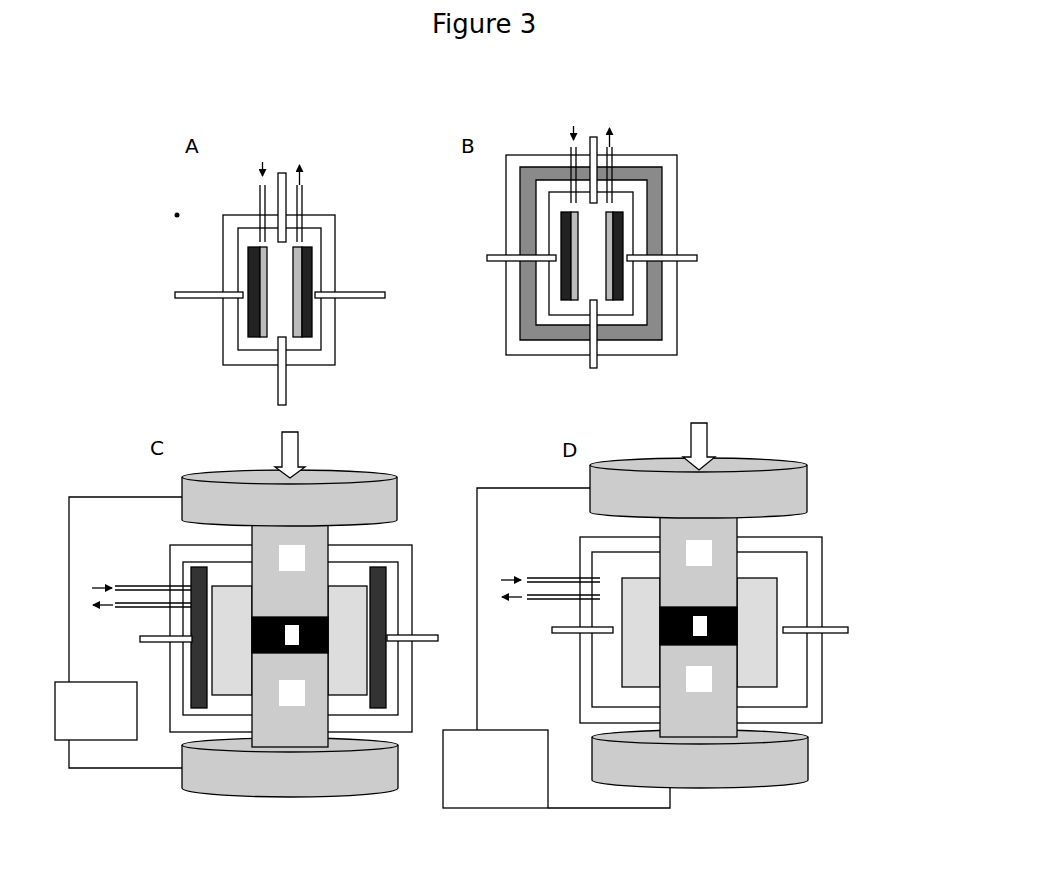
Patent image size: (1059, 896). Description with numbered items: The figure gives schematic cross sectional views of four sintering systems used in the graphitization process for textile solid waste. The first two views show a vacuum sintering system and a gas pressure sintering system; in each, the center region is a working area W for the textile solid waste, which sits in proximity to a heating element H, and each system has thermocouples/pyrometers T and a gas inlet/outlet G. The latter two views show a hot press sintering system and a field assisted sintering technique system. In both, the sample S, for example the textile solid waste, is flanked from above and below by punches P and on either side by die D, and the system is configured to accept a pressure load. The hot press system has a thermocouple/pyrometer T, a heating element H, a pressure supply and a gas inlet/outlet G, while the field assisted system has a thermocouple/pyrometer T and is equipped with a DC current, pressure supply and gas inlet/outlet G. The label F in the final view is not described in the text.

In FIG. 3A, the thermocouple/pyrometer T is at (280, 271).
In FIG. 3B, the thermocouple/pyrometer T is at (592, 234).
In FIG. 3C, the thermocouple/pyrometer T is at (286, 655).
In FIG. 3D, the thermocouple/pyrometer T is at (696, 646).
In FIG. 3A, the gas inlet/outlet G is at (292, 202).
In FIG. 3B, the gas inlet/outlet G is at (602, 164).
In FIG. 3C, the gas inlet/outlet G is at (141, 610).
In FIG. 3D, the gas inlet/outlet G is at (550, 602).
In FIG. 3A, the working area W is at (280, 292).
In FIG. 3B, the working area W is at (592, 256).
In FIG. 3A, the heating element H is at (280, 292).
In FIG. 3B, the heating element H is at (592, 255).
In FIG. 3C, the heating element H is at (302, 638).
In FIG. 3C, the punch P is at (290, 635).
In FIG. 3D, the punch P is at (698, 624).
In FIG. 3C, the sample S is at (290, 635).
In FIG. 3D, the sample S is at (698, 626).
In FIG. 3C, the die D is at (289, 640).
In FIG. 3D, the die D is at (699, 632).
In FIG. 3D, the furnace housing F is at (644, 630).